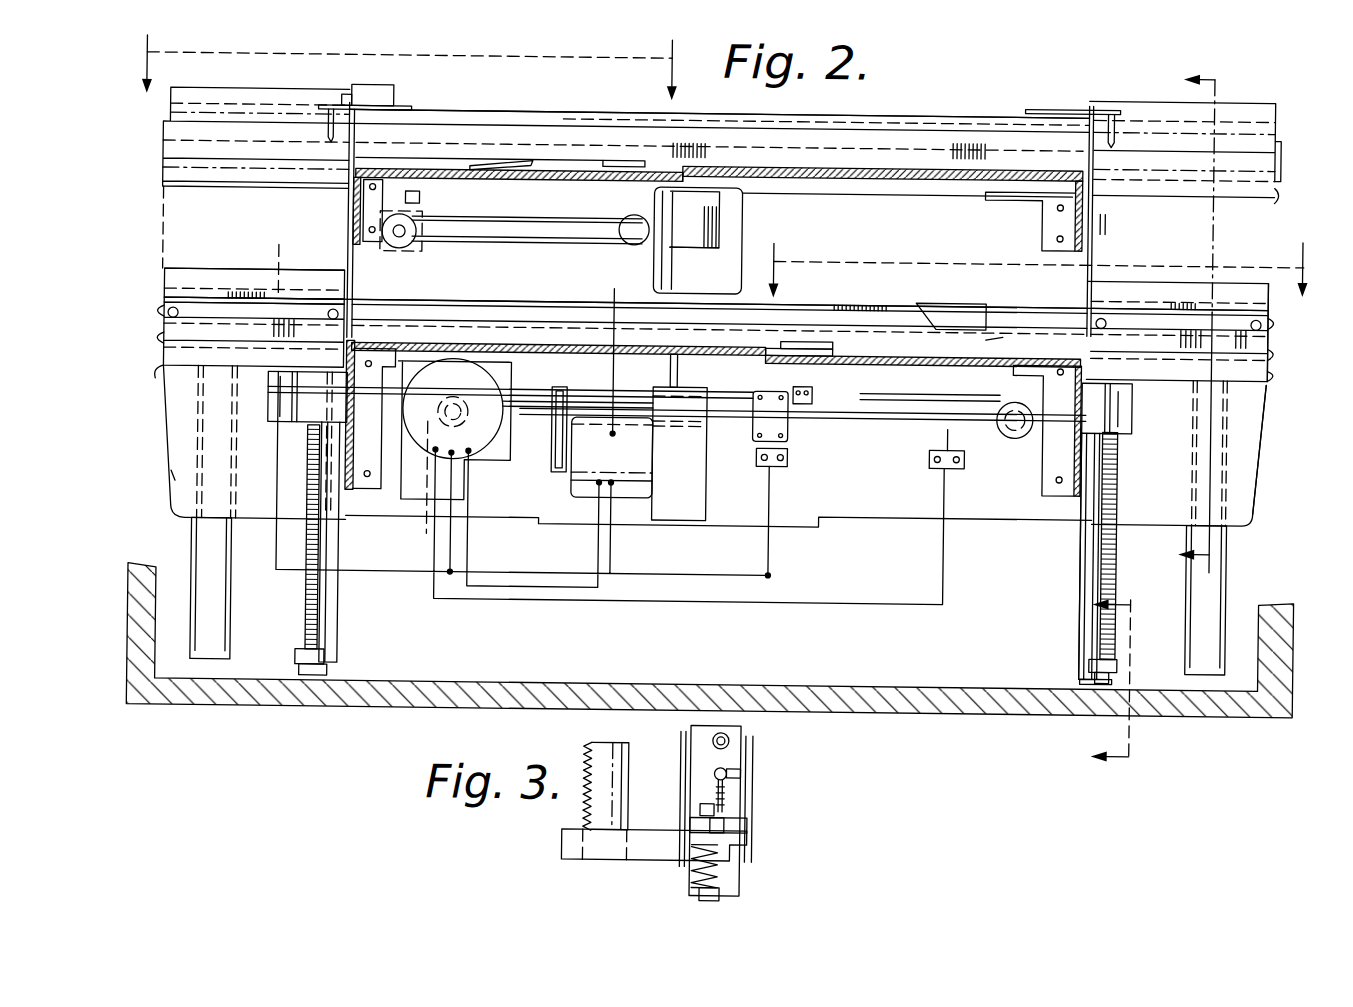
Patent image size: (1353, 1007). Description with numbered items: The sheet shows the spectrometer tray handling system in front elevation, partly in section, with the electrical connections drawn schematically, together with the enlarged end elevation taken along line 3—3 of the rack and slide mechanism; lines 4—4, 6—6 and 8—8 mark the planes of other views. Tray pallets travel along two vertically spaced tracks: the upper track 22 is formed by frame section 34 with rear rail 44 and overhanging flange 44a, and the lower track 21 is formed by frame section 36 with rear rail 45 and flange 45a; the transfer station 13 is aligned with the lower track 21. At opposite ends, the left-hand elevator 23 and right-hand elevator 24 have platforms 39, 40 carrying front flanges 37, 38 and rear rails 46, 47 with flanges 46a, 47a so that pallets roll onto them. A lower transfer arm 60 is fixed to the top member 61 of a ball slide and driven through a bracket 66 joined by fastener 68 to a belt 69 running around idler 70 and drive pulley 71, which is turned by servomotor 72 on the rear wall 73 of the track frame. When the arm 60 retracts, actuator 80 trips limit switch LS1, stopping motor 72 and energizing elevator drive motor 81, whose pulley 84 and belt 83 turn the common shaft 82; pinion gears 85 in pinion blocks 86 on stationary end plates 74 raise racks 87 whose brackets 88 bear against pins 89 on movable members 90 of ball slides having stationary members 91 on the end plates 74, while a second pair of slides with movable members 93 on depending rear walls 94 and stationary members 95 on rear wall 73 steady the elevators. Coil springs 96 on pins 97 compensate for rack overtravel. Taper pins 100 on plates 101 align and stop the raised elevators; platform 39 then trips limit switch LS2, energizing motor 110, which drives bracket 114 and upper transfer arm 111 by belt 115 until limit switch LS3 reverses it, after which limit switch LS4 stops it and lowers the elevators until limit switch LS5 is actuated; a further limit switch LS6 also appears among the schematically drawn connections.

In FIG. 2, the section line 8— 8 is at (401, 63).
In FIG. 2, the section line 6— 6 is at (1043, 255).
In FIG. 2, the section line 4— 4 is at (1220, 318).
In FIG. 2, the section line 3— 3 is at (1130, 680).
In FIG. 2, the transfer station 13 is at (716, 245).
In FIG. 2, the lower track 21 is at (836, 292).
In FIG. 2, the upper track 22 is at (903, 110).
In FIG. 2, the left-hand elevator 23 is at (152, 425).
In FIG. 2, the right-hand elevator 24 is at (1268, 427).
In FIG. 2, the upper track frame section 34 is at (945, 176).
In FIG. 2, the lower track frame section 36 is at (935, 360).
In FIG. 2, the flange 37 is at (180, 368).
In FIG. 2, the flange 38 is at (1272, 372).
In FIG. 2, the platform of left-hand elevator 39 is at (165, 333).
In FIG. 2, the platform of right-hand elevator 40 is at (1272, 343).
In FIG. 2, the rail 44 is at (942, 135).
In FIG. 2, the flange 44a is at (880, 125).
In FIG. 2, the rail 45 is at (1012, 328).
In FIG. 2, the flange 45a is at (890, 290).
In FIG. 2, the rail 46 is at (178, 310).
In FIG. 2, the flange 46a is at (180, 292).
In FIG. 2, the rail 47 is at (1272, 308).
In FIG. 2, the flange 47a is at (1238, 302).
In FIG. 2, the transfer arm 60 is at (950, 300).
In FIG. 2, the top member of ball slide 61 is at (1002, 327).
In FIG. 2, the bracket 66 is at (800, 334).
In FIG. 2, the fastener 68 is at (815, 385).
In FIG. 2, the belt 69 is at (905, 395).
In FIG. 2, the idler 70 is at (1015, 428).
In FIG. 2, the drive pulley 71 is at (428, 530).
In FIG. 2, the servomotor 72 is at (482, 450).
In FIG. 2, the rear wall of track frame 73 is at (166, 506).
In FIG. 2, the end plate 74 is at (345, 457).
In FIG. 2, the actuator 80 is at (790, 432).
In FIG. 2, the elevator drive motor 81 is at (612, 500).
In FIG. 2, the common shaft 82 is at (707, 400).
In FIG. 2, the belt 83 is at (553, 410).
In FIG. 2, the pulley 84 is at (572, 470).
In FIG. 2, the pinion gear 85 is at (280, 462).
In FIG. 2, the pinion block 86 is at (292, 392).
In FIG. 2, the rack 87 is at (305, 587).
In FIG. 3, the rack 87 is at (600, 745).
In FIG. 2, the bracket 88 is at (300, 648).
In FIG. 3, the bracket 88 is at (598, 860).
In FIG. 3, the pin 89 is at (752, 826).
In FIG. 2, the movable member of ball slide 90 is at (1088, 579).
In FIG. 3, the movable member of ball slide 90 is at (695, 722).
In FIG. 2, the stationary member of ball slide 91 is at (1082, 638).
In FIG. 3, the stationary member of ball slide 91 is at (762, 792).
In FIG. 2, the movable member of rear ball slide 93 is at (228, 660).
In FIG. 2, the depending rear wall 94 is at (172, 467).
In FIG. 2, the stationary member of rear ball slide 95 is at (193, 535).
In FIG. 2, the coil spring 96 is at (302, 657).
In FIG. 3, the coil spring 96 is at (705, 866).
In FIG. 3, the pin 97 is at (715, 821).
In FIG. 2, the taper pin 100 is at (325, 120).
In FIG. 2, the plate 101 is at (405, 102).
In FIG. 2, the drive motor 110 is at (420, 262).
In FIG. 2, the upper transfer arm 111 is at (515, 157).
In FIG. 2, the bracket 114 is at (622, 155).
In FIG. 2, the belt 115 is at (522, 214).
In FIG. 2, the limit switch LS1 is at (788, 458).
In FIG. 2, the limit switch LS2 is at (341, 84).
In FIG. 2, the limit switch LS3 is at (420, 195).
In FIG. 2, the limit switch LS4 is at (652, 198).
In FIG. 2, the limit switch LS5 is at (280, 262).
In FIG. 2, the limit switch LS6 is at (935, 462).